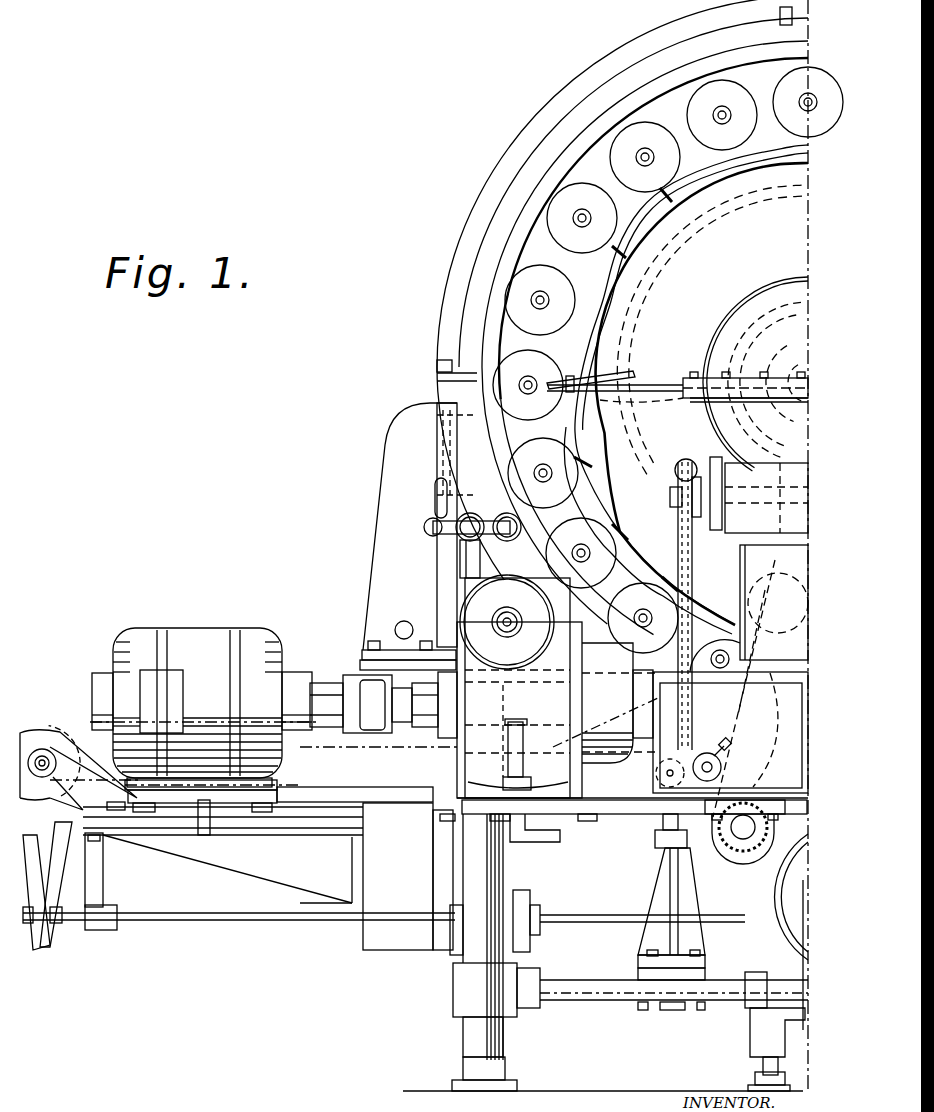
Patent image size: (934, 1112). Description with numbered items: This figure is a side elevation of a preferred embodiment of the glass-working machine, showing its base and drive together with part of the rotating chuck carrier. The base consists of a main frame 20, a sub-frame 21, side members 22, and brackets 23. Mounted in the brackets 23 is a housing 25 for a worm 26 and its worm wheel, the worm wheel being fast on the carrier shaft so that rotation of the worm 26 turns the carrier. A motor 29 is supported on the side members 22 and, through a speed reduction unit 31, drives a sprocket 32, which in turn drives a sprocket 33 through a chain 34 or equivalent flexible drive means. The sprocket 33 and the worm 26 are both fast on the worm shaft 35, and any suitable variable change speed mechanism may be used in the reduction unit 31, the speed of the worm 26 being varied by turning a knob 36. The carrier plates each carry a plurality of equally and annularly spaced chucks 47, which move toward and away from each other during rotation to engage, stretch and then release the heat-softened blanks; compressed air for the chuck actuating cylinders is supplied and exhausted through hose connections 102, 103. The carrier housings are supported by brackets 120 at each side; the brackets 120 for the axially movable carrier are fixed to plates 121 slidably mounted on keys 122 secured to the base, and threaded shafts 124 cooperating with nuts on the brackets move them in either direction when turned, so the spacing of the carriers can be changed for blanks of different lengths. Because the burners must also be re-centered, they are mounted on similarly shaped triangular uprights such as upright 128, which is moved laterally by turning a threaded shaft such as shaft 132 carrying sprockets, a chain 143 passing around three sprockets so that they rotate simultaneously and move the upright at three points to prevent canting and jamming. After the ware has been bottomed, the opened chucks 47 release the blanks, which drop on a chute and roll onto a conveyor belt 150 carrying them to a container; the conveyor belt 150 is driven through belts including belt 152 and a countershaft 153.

The main frame 20 is at (468, 1033).
The sub-frame 21 is at (760, 1022).
The side members 22 is at (208, 838).
The brackets 23 is at (743, 553).
The housing 25 is at (708, 425).
The worm 26 is at (797, 472).
The motor 29 is at (190, 627).
The speed reduction unit 31 is at (480, 767).
The sprocket 32 is at (695, 728).
The sprocket 33 is at (680, 466).
The chain 34 is at (690, 580).
The worm shaft 35 is at (672, 494).
The knob 36 is at (478, 604).
The chucks 47 is at (648, 187).
The hose connection 102 is at (627, 378).
The hose connection 103 is at (618, 402).
The brackets 120 is at (383, 527).
The plates 121 is at (362, 669).
The keys 122 is at (367, 650).
The threaded shafts 124 is at (396, 628).
The triangular upright 128 is at (760, 681).
The shaft 132 is at (741, 833).
The chain 143 is at (714, 840).
The conveyor belt 150 is at (33, 723).
The belt 152 is at (62, 824).
The countershaft 153 is at (223, 918).